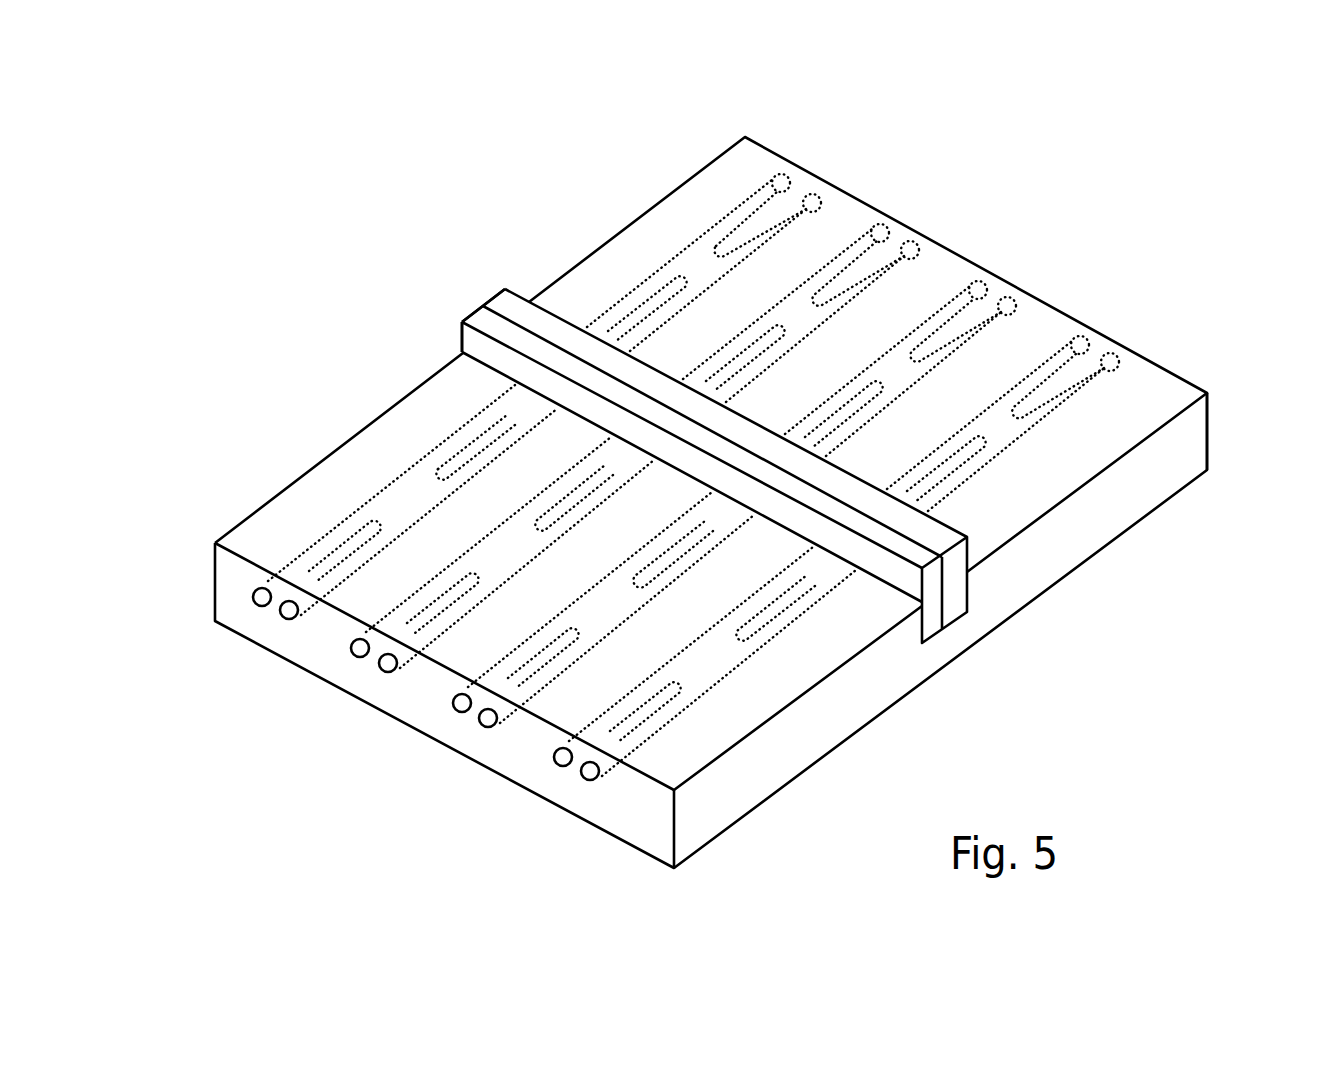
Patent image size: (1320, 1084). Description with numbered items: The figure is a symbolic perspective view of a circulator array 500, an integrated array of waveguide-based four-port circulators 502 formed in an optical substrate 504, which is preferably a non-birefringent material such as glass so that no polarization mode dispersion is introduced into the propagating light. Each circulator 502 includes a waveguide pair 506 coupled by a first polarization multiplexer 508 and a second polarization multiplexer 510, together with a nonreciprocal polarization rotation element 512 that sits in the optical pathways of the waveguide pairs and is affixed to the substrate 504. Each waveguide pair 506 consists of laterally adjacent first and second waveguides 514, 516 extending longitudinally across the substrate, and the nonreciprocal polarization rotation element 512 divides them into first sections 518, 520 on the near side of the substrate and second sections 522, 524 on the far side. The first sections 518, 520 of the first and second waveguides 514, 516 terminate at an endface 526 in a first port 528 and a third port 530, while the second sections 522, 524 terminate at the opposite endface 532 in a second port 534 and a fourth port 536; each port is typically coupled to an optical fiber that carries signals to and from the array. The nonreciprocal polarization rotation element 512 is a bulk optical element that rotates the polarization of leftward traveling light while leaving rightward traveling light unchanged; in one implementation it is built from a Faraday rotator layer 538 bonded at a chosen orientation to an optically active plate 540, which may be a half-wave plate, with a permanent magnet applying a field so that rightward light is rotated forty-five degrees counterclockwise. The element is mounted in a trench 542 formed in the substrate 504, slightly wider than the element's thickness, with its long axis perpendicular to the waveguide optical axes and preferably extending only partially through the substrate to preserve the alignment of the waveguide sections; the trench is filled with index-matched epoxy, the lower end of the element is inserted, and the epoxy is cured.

The circulator array 500 is at (252, 852).
The four-port circulator 502 is at (1177, 337).
The optical substrate 504 is at (793, 752).
The waveguide pair 506 is at (417, 460).
The first polarization multiplexer 508 is at (403, 495).
The second polarization multiplexer 510 is at (700, 270).
The nonreciprocal polarization rotation element 512 is at (458, 341).
The first waveguide 514 is at (313, 552).
The second waveguide 516 is at (365, 545).
The first section of first waveguide 518 is at (507, 445).
The first section of second waveguide 520 is at (453, 435).
The second section of first waveguide 522 is at (776, 178).
The second section of second waveguide 524 is at (723, 227).
The endface 526 is at (511, 768).
The first port 528 is at (282, 619).
The third port 530 is at (254, 605).
The opposite endface 532 is at (1207, 412).
The second port 534 is at (810, 190).
The fourth port 536 is at (763, 237).
The Faraday rotator layer 538 is at (477, 320).
The optically active plate 540 is at (515, 302).
The trench 542 is at (942, 645).